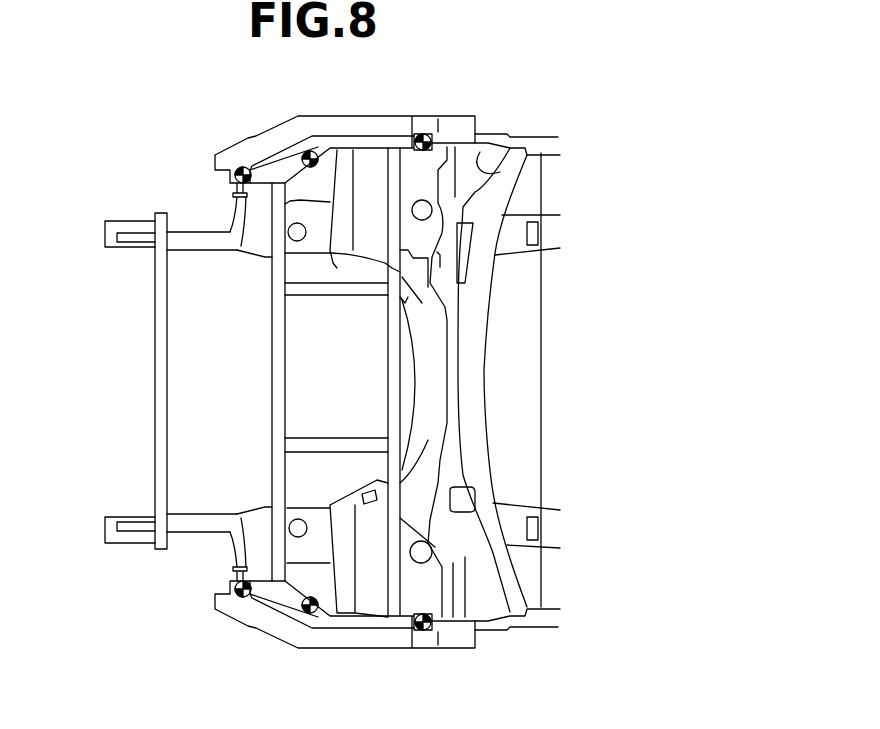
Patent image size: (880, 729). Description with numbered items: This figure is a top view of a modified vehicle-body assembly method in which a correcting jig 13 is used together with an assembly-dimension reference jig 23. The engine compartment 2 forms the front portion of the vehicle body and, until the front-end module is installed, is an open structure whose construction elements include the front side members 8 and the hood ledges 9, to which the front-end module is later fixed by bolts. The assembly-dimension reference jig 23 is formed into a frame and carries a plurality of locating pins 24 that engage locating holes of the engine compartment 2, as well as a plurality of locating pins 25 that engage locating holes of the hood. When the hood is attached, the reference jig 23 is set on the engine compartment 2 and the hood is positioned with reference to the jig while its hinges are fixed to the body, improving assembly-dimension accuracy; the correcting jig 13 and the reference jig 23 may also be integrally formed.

The engine compartment 2 is at (264, 257).
The front side member 8 is at (182, 235).
The hood ledge 9 is at (297, 125).
The correcting jig 13 is at (155, 399).
The assembly-dimension reference jig 23 is at (272, 407).
The locating pins 24 is at (238, 170).
The locating pins 25 is at (313, 151).